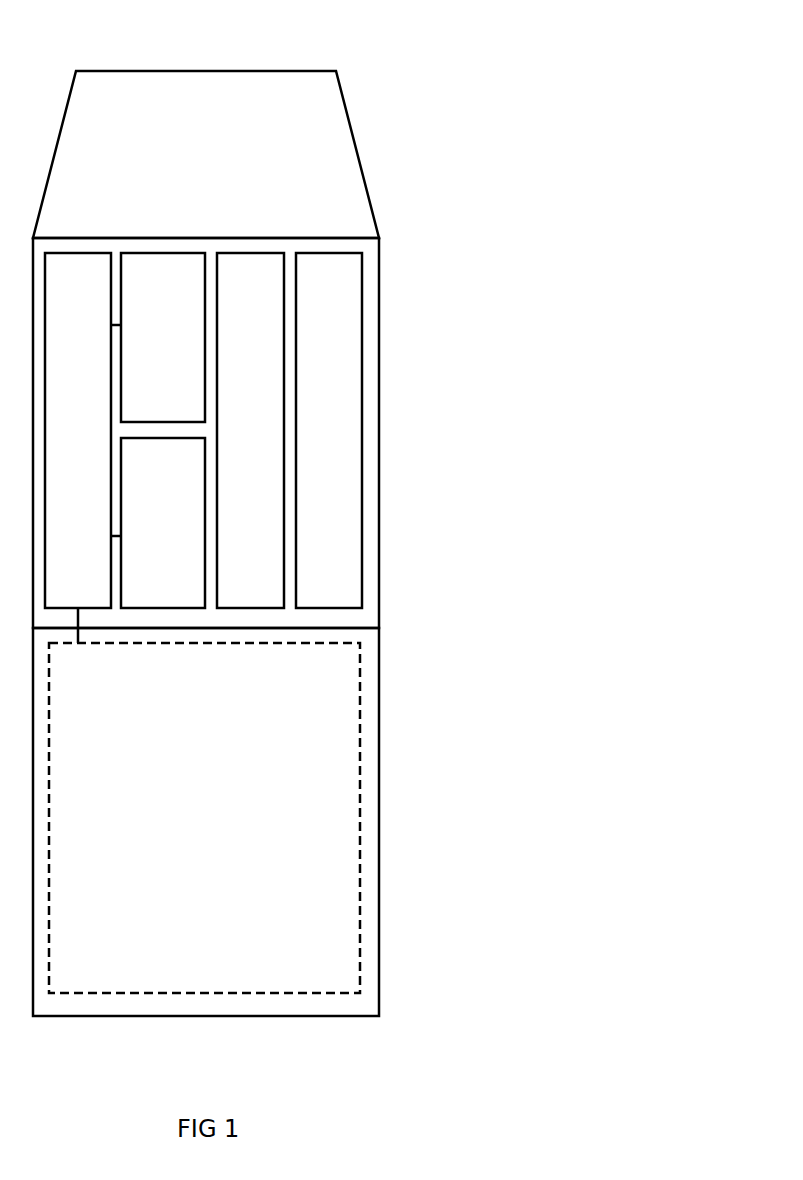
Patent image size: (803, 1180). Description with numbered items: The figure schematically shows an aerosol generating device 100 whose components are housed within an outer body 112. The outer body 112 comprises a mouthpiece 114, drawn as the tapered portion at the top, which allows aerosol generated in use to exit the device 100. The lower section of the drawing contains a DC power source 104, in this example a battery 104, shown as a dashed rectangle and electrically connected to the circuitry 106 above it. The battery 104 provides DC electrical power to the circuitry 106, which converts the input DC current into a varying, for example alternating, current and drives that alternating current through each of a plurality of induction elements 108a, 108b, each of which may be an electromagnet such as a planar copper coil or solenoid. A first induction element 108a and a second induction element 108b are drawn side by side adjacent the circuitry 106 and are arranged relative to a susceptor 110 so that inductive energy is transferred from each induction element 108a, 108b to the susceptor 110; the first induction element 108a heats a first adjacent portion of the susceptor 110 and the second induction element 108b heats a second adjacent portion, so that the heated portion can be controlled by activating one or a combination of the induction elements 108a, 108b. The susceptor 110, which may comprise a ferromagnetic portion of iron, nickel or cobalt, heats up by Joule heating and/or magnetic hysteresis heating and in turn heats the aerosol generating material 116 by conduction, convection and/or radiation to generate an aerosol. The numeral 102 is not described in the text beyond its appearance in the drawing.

The aerosol generating device 100 is at (371, 68).
The battery housing portion 102 is at (380, 906).
The DC power source 104 is at (228, 828).
The circuitry 106 is at (93, 432).
The first induction element 108a is at (188, 349).
The second induction element 108b is at (188, 532).
The susceptor 110 is at (272, 433).
The outer body 112 is at (380, 463).
The mouthpiece 114 is at (358, 150).
The aerosol generating material 116 is at (347, 433).